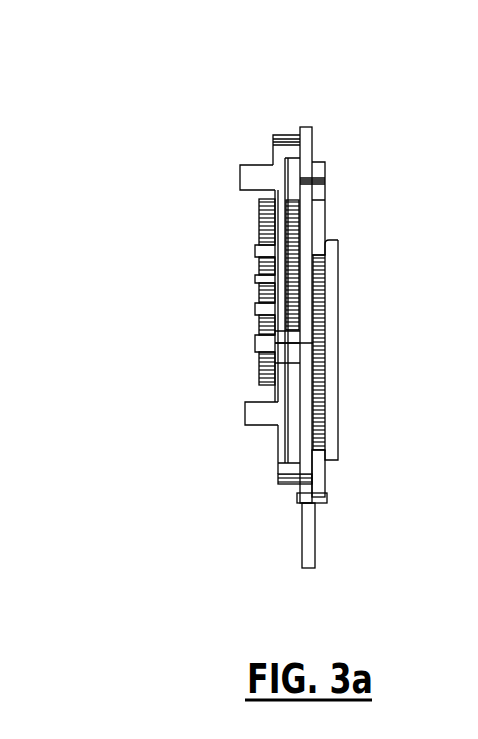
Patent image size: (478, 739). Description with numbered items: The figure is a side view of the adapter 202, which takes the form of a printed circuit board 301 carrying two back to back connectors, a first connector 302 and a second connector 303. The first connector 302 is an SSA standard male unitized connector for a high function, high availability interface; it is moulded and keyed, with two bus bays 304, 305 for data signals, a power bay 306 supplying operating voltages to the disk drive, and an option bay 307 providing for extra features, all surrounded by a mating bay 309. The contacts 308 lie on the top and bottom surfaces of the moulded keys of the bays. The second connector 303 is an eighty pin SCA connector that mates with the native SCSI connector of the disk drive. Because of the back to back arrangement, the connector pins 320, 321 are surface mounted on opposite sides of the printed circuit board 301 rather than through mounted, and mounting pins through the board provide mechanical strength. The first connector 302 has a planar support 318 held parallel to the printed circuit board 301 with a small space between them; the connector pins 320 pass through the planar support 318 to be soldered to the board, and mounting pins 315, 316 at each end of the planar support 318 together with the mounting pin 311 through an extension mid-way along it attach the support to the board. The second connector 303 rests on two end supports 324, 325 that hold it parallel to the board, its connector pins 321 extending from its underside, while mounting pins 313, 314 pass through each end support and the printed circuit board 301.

The adapter 202 is at (266, 76).
The printed circuit board 301 is at (305, 537).
The connector 302 is at (234, 322).
The second connector 303 is at (340, 435).
The bus bay 304 is at (250, 333).
The bus bay 305 is at (252, 372).
The power bay 306 is at (256, 250).
The option bay 307 is at (257, 290).
The contacts 308 is at (258, 210).
The mating bay 309 is at (240, 180).
The mounting pin 311 is at (296, 330).
The mounting pin 313 is at (326, 180).
The mounting pin 314 is at (327, 497).
The mounting pin 315 is at (313, 128).
The mounting pin 316 is at (283, 478).
The planar support 318 is at (280, 440).
The connector pins 320 is at (297, 191).
The connector pins 321 is at (325, 380).
The end support 324 is at (326, 246).
The end support 325 is at (323, 478).